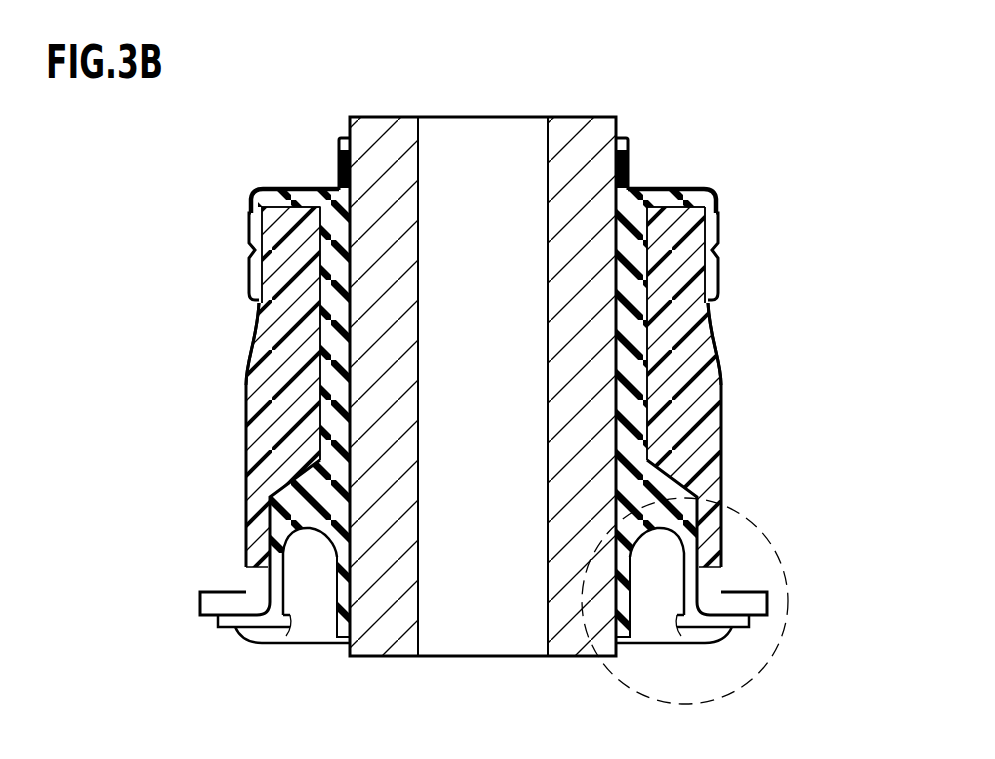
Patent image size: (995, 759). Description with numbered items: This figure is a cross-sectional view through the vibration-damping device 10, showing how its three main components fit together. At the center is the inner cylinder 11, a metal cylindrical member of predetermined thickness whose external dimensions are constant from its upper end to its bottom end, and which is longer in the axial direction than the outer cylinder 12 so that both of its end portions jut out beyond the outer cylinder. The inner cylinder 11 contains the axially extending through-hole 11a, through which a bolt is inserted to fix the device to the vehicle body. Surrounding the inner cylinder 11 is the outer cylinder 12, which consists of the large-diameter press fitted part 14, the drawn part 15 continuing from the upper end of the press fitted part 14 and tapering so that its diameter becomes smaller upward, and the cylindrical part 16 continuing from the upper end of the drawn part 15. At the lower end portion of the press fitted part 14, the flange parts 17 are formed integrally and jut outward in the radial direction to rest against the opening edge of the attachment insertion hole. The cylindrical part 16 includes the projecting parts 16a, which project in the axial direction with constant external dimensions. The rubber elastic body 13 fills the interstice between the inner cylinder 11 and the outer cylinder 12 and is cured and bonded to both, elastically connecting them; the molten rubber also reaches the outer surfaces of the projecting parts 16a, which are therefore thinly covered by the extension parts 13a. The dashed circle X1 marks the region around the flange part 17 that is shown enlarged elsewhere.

The vibration-damping device 10 is at (772, 98).
The inner cylinder 11 is at (383, 127).
The through-hole 11a is at (548, 147).
The outer cylinder 12 is at (220, 333).
The rubber elastic body 13 is at (305, 188).
The extension part 13a is at (252, 223).
The press fitted part 14 is at (723, 447).
The drawn part 15 is at (715, 347).
The cylindrical part 16 is at (710, 307).
The projecting part 16a is at (282, 227).
The flange part 17 is at (200, 603).
The enlarged detail region X1 is at (772, 655).